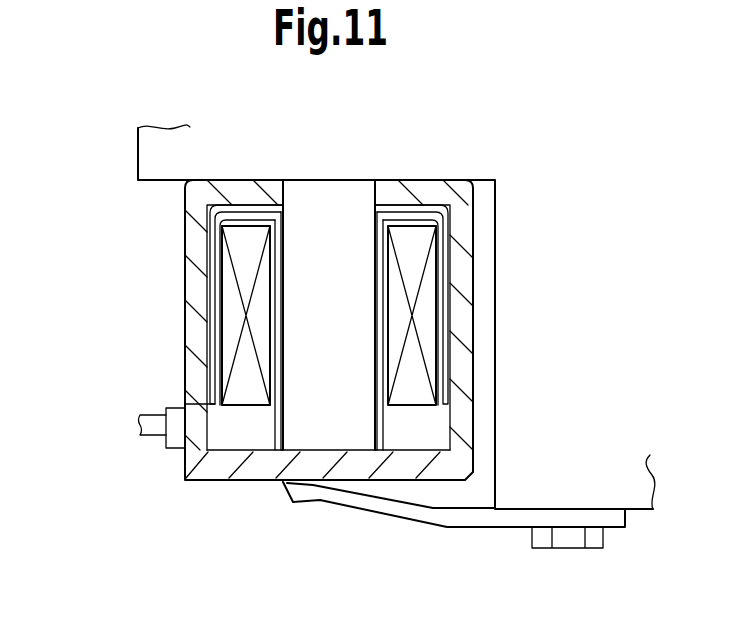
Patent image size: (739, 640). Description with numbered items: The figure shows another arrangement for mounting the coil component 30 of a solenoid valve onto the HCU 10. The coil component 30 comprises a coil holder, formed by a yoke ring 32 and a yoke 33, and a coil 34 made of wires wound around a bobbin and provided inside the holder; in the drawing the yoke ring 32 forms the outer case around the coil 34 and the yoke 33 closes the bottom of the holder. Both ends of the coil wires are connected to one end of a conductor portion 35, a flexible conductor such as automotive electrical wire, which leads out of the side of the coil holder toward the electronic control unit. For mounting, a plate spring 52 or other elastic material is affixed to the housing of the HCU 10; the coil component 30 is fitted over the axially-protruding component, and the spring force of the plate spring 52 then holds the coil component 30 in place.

The HCU 10 is at (132, 150).
The coil component 30 is at (175, 252).
The yoke ring 32 is at (185, 311).
The yoke 33 is at (227, 476).
The coil 34 is at (210, 428).
The conductor portion 35 is at (153, 438).
The plate spring 52 is at (488, 517).